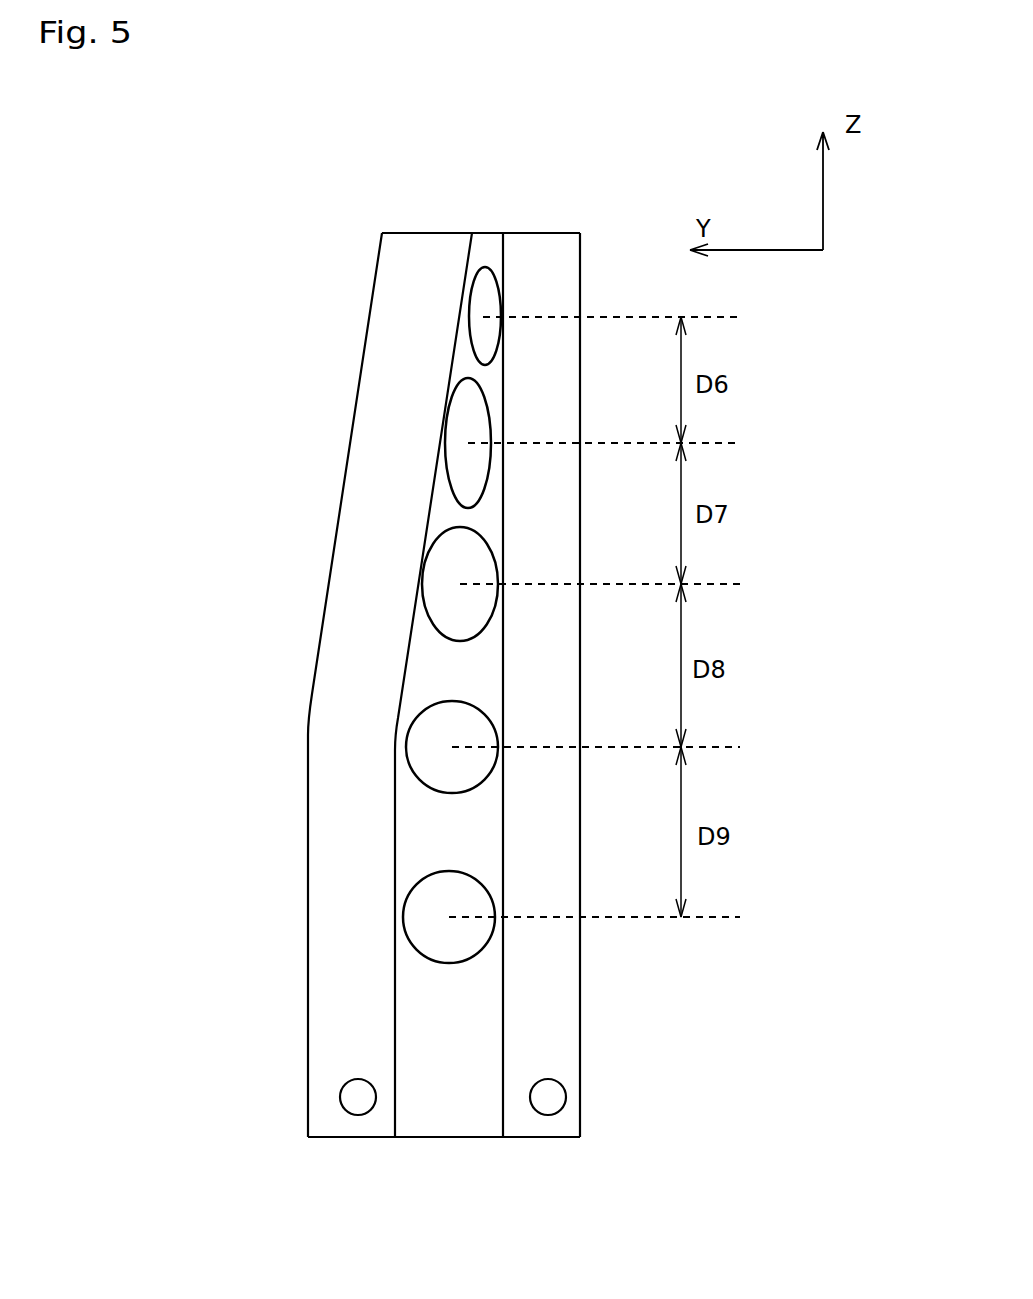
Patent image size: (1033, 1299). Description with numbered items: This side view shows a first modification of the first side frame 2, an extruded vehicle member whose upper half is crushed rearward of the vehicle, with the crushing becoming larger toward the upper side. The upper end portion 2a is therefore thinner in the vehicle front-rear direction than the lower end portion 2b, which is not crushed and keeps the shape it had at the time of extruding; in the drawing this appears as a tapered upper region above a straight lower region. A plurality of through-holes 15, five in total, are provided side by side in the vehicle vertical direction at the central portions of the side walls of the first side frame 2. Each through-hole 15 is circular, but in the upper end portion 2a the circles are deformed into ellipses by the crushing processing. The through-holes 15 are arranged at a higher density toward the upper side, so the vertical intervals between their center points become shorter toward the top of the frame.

The first side frame 2 is at (296, 379).
The upper end portion 2a is at (382, 233).
The lower end portion 2b is at (308, 1127).
The through-holes 15 is at (468, 337).